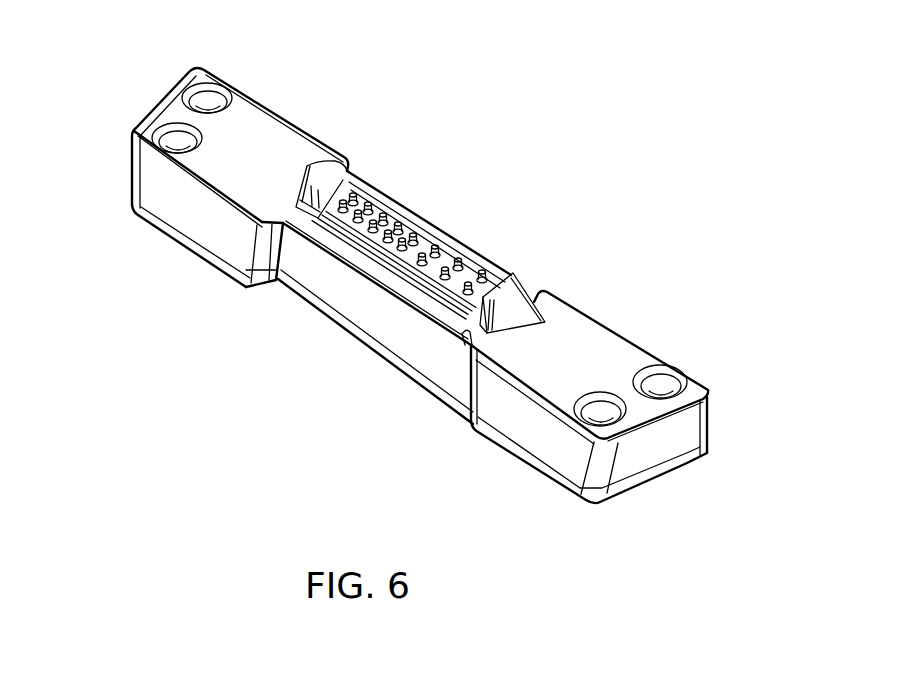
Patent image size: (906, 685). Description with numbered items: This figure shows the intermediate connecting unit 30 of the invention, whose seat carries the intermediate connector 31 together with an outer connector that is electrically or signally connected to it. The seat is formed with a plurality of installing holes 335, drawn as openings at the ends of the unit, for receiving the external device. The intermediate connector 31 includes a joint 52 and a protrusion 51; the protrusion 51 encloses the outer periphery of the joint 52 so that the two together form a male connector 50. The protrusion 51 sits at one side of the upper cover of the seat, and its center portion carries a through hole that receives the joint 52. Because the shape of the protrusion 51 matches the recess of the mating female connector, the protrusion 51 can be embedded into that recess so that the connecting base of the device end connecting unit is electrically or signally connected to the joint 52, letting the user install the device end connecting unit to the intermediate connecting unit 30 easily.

The intermediate connecting unit 30 is at (137, 105).
The installing holes 335 is at (200, 97).
The intermediate connector 31 is at (423, 241).
The male connector 50 is at (527, 294).
The protrusion 51 is at (468, 338).
The joint 52 is at (377, 236).